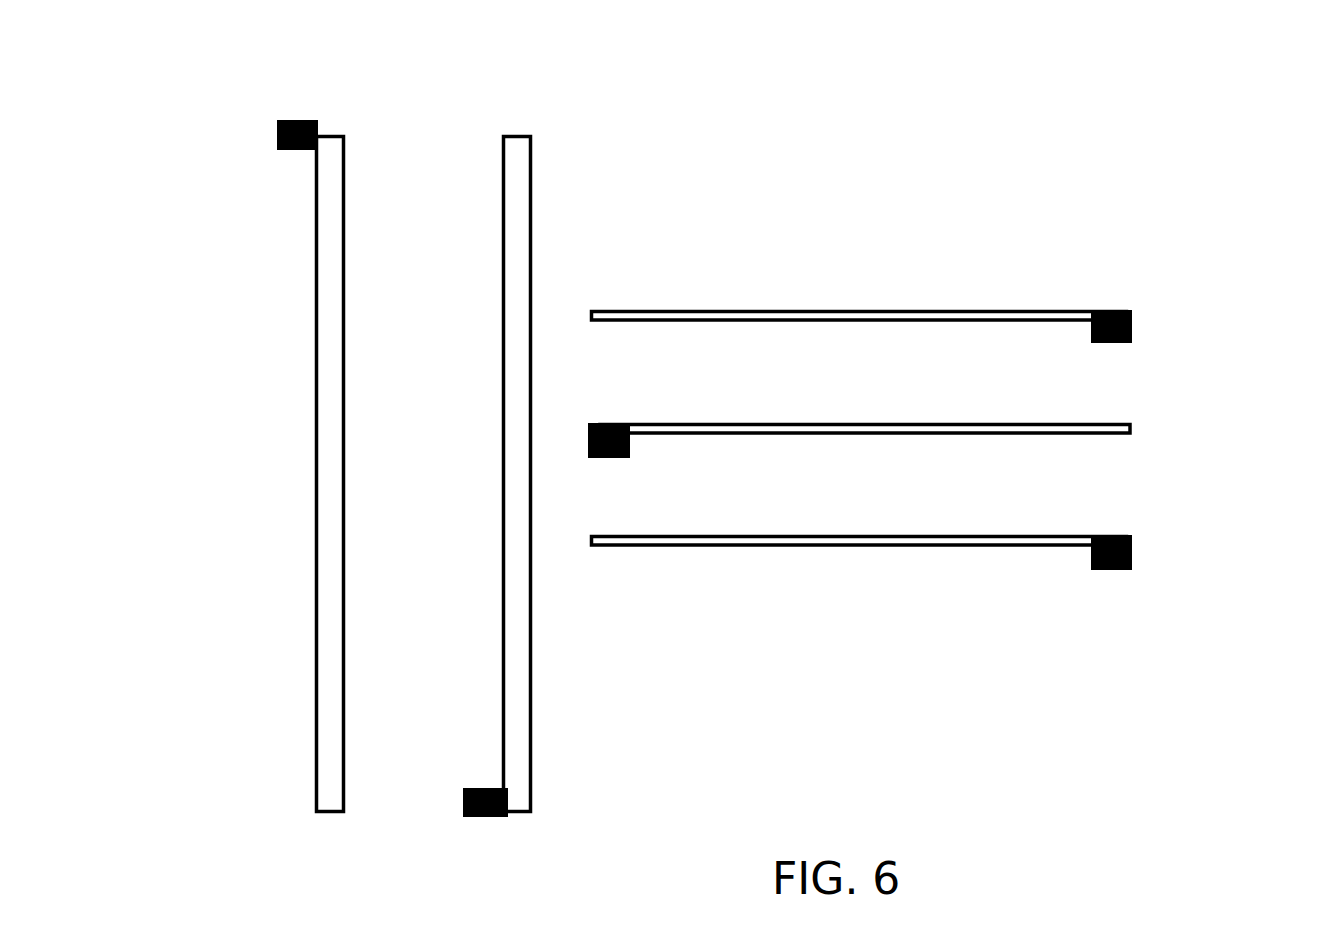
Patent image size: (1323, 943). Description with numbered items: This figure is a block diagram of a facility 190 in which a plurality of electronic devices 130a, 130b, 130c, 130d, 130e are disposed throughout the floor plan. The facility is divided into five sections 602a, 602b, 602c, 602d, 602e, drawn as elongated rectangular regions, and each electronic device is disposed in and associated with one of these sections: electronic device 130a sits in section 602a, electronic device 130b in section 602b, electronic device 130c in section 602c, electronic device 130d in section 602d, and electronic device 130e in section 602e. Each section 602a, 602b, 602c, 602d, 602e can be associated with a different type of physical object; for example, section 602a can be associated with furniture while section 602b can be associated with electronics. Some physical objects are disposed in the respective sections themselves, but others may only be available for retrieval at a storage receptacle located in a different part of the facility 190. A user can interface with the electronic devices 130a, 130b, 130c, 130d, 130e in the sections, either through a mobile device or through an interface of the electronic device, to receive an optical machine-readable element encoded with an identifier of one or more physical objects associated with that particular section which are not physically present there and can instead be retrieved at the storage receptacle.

The electronic device 130a is at (1132, 328).
The electronic device 130b is at (630, 440).
The electronic device 130c is at (1132, 553).
The electronic device 130d is at (485, 818).
The electronic device 130e is at (275, 130).
The section 602a is at (778, 357).
The section 602b is at (820, 499).
The section 602c is at (823, 574).
The section 602d is at (418, 120).
The section 602e is at (224, 792).
The facility 190 is at (1093, 751).